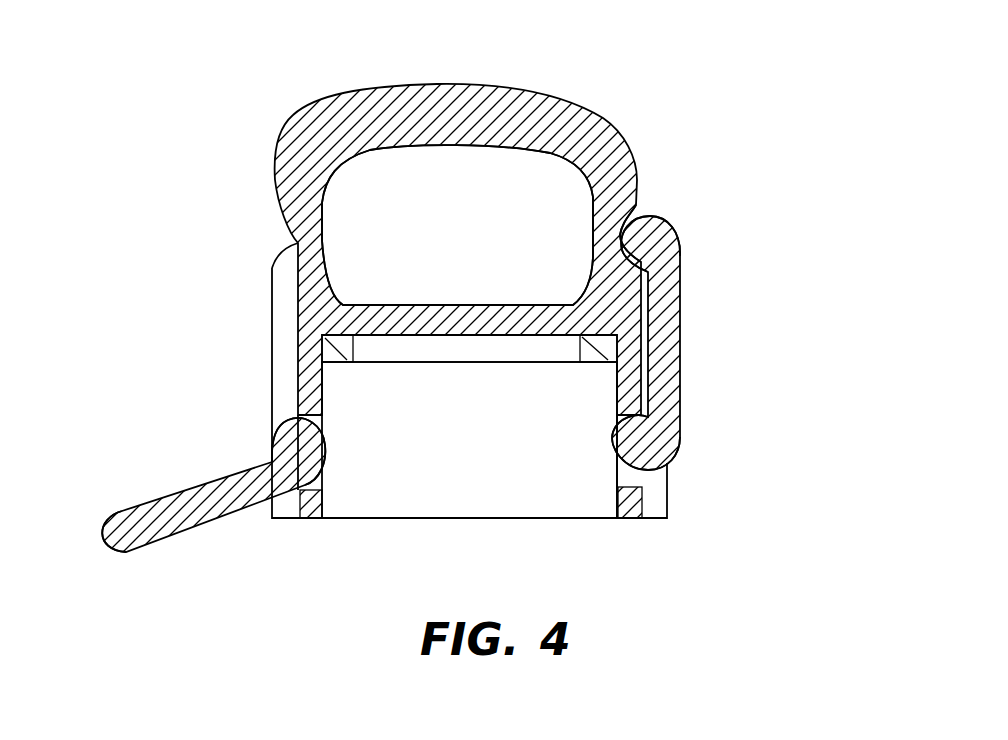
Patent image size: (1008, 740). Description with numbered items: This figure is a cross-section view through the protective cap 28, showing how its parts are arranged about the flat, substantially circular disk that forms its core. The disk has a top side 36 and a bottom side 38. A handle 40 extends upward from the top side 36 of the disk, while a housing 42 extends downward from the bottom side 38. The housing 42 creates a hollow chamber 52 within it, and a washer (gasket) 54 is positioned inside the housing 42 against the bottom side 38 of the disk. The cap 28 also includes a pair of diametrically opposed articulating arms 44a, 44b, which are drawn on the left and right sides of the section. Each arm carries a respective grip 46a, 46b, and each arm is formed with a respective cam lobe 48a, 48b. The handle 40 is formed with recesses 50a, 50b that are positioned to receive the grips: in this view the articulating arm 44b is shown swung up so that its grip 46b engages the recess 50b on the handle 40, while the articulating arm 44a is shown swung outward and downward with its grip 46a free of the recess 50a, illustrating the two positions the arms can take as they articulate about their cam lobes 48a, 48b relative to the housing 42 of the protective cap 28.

The protective cap 28 is at (736, 165).
The top side 36 is at (442, 303).
The bottom side 38 is at (527, 337).
The handle 40 is at (461, 84).
The housing 42 is at (527, 490).
The articulating arm 44a is at (212, 527).
The articulating arm 44b is at (683, 308).
The grip 46a is at (106, 545).
The grip 46b is at (661, 226).
The cam lobe 48a is at (290, 450).
The cam lobe 48b is at (643, 447).
The recess 50a is at (277, 245).
The recess 50b is at (637, 200).
The hollow chamber 52 is at (480, 449).
The washer (gasket) 54 is at (322, 362).